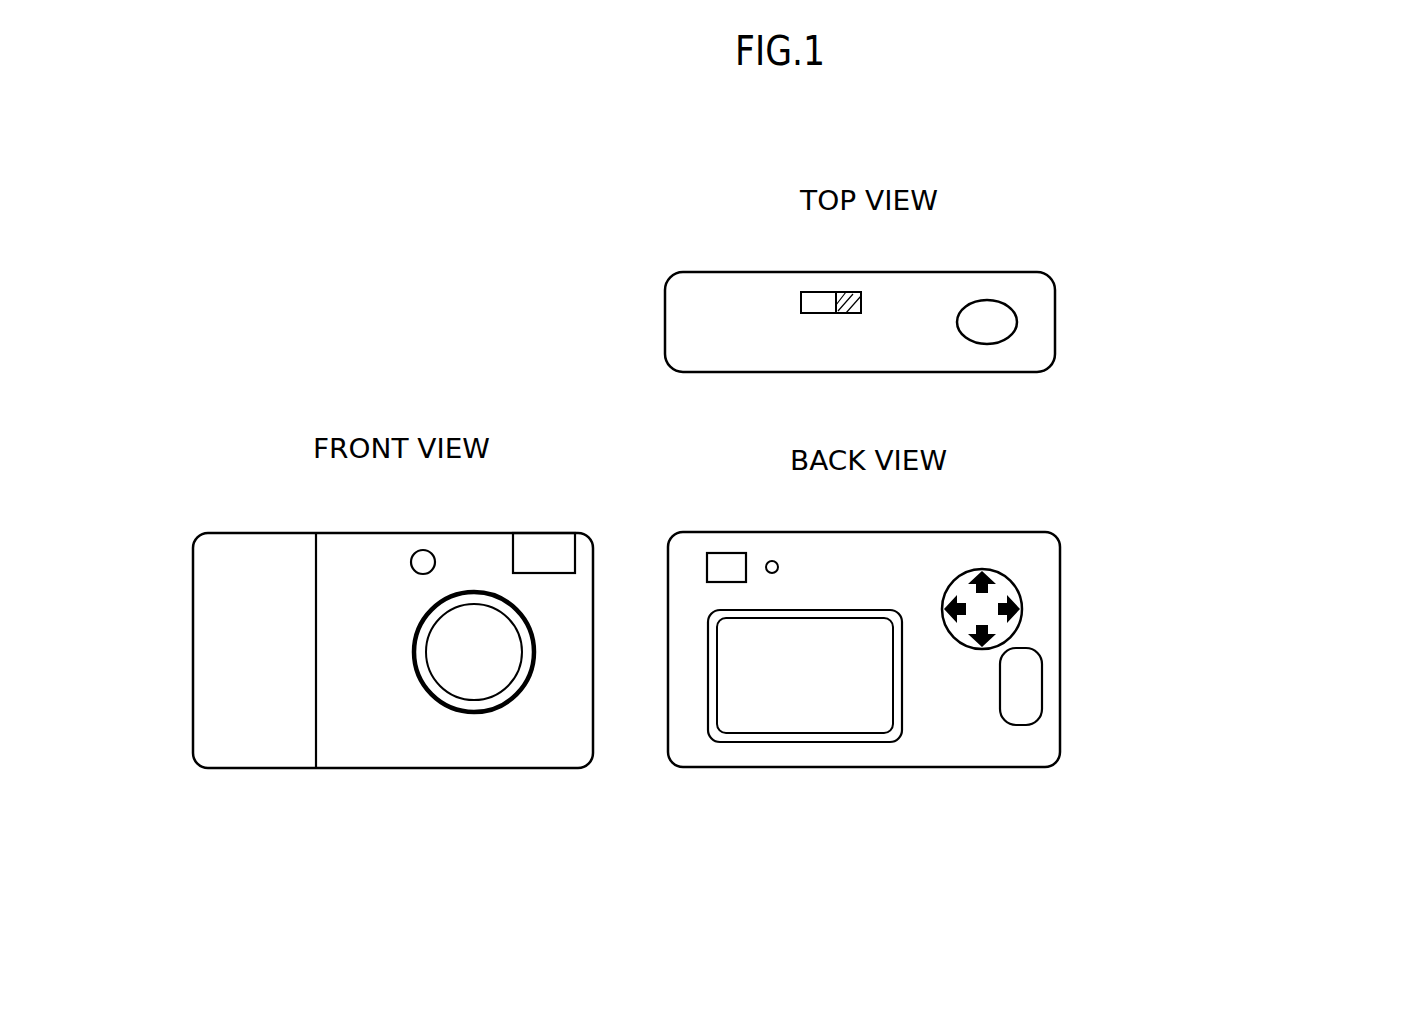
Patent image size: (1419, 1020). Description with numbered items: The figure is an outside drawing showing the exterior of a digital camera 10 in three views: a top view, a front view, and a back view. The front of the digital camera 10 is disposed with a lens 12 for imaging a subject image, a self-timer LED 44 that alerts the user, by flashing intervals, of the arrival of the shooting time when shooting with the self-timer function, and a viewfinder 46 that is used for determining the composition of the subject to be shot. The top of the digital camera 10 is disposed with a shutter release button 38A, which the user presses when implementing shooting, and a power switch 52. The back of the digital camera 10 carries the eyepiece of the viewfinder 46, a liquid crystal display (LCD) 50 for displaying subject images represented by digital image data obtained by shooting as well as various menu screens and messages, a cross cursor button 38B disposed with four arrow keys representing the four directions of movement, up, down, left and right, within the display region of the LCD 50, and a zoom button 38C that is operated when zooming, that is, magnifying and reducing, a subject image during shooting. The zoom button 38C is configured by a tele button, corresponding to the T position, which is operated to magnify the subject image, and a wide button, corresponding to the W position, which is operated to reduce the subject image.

The digital camera 10 is at (330, 246).
The power switch 52 is at (805, 292).
The shutter release button 38A is at (1042, 257).
The self-timer LED 44 is at (414, 560).
The viewfinder 46 is at (715, 562).
The lens 12 is at (468, 687).
The liquid crystal display 50 is at (807, 733).
The cross cursor button 38B is at (967, 647).
The zoom button 38C is at (1032, 677).